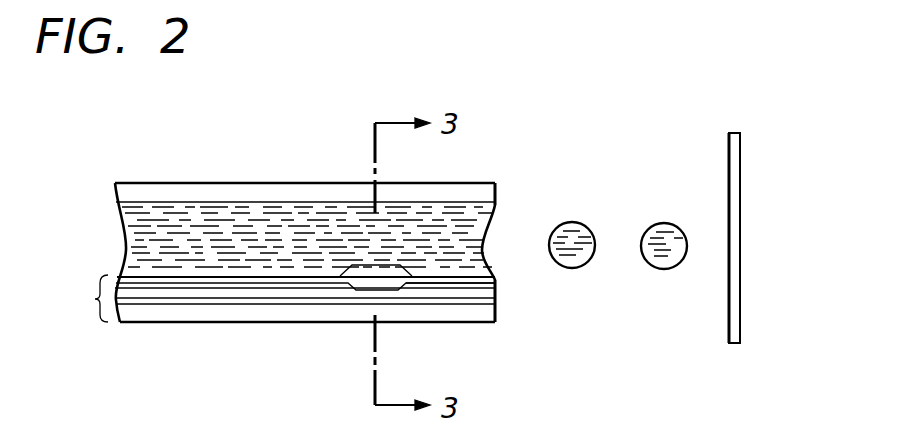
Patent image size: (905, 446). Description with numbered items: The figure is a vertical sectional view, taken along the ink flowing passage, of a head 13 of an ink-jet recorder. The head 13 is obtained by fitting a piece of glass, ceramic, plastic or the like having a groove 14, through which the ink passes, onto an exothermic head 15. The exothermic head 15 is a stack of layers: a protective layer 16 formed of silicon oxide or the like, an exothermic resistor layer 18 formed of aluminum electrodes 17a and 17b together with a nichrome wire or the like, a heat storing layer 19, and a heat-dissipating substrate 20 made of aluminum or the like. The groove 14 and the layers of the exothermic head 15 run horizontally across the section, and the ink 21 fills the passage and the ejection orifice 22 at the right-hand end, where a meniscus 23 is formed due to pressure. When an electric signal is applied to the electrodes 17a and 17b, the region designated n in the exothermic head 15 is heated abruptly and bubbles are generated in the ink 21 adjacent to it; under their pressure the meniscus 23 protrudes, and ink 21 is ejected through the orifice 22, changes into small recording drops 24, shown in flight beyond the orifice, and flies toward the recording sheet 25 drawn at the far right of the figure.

The head 13 is at (197, 182).
The groove 14 is at (247, 202).
The exothermic head 15 is at (87, 298).
The protective layer 16 is at (148, 280).
The aluminum electrode 17a is at (196, 285).
The aluminum electrode 17b is at (458, 288).
The exothermic resistor layer 18 is at (238, 295).
The heat storing layer 19 is at (289, 305).
The heat-dissipating substrate 20 is at (348, 315).
The ink 21 is at (153, 214).
The ejection orifice 22 is at (500, 265).
The meniscus 23 is at (493, 228).
The recording drops 24 is at (688, 213).
The recording sheet 25 is at (729, 167).
The heated region n is at (381, 264).